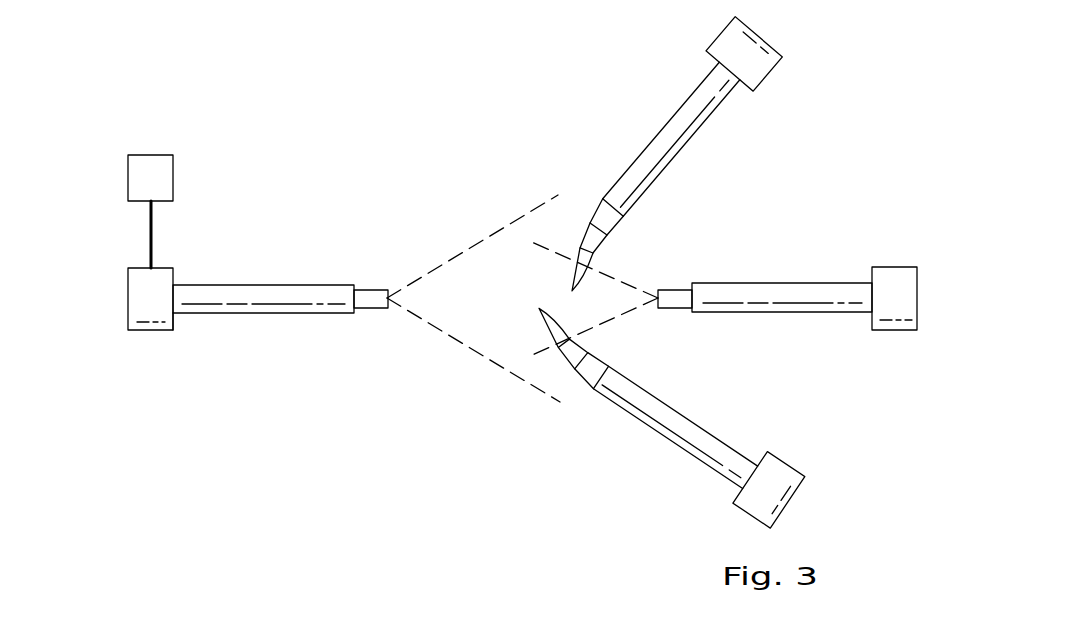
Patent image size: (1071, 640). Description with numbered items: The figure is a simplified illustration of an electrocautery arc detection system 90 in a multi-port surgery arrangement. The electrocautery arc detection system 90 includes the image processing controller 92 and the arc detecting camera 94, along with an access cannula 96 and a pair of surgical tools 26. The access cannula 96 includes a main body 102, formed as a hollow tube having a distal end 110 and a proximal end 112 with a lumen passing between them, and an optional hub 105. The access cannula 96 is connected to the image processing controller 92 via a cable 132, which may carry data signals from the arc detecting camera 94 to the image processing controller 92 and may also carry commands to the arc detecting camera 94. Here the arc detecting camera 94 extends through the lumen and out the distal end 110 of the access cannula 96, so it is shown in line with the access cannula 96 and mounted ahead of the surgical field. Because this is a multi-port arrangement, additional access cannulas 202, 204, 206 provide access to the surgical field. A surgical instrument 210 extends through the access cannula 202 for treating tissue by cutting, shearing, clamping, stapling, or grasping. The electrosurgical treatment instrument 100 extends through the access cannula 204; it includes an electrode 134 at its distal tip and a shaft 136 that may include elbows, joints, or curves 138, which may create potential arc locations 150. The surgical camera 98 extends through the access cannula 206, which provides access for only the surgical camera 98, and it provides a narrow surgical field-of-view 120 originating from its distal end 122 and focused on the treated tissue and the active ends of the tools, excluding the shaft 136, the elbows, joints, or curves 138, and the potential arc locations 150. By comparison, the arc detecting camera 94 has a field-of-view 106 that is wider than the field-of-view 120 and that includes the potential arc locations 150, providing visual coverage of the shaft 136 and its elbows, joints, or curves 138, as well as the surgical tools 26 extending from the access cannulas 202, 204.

The electrocautery arc detection system 90 is at (263, 130).
The image processing controller 92 is at (128, 175).
The cable 132 is at (151, 235).
The hub 105 is at (150, 332).
The main body 102 is at (203, 293).
The access cannula 96 is at (263, 284).
The distal end 110 is at (347, 272).
The proximal end 112 is at (185, 332).
The arc detecting camera 94 is at (372, 309).
The field-of-view 106 is at (468, 343).
The surgical tools 26 is at (555, 125).
The access cannula 202 is at (662, 130).
The surgical instrument 210 is at (597, 208).
The field-of-view 120 is at (622, 280).
The distal end 122 is at (703, 270).
The access cannula 206 is at (783, 283).
The surgical camera 98 is at (675, 309).
The electrode 134 is at (565, 325).
The electrosurgical treatment instrument 100 is at (545, 323).
The shaft 136 is at (578, 342).
The elbows, joints, or curves 138 is at (568, 372).
The potential arc locations 150 is at (586, 380).
The access cannula 204 is at (670, 442).